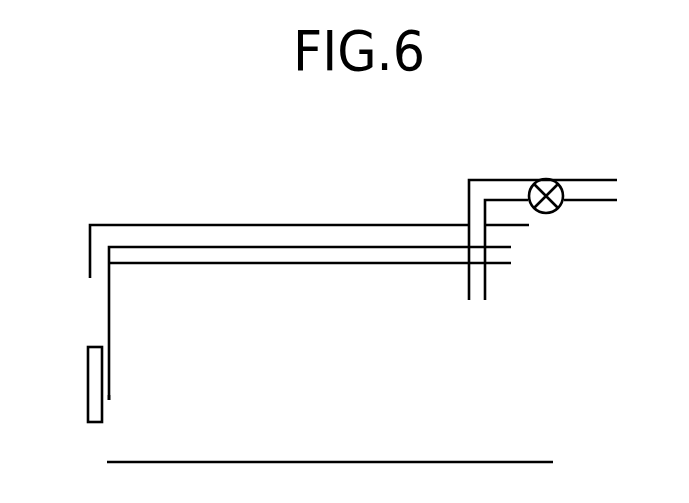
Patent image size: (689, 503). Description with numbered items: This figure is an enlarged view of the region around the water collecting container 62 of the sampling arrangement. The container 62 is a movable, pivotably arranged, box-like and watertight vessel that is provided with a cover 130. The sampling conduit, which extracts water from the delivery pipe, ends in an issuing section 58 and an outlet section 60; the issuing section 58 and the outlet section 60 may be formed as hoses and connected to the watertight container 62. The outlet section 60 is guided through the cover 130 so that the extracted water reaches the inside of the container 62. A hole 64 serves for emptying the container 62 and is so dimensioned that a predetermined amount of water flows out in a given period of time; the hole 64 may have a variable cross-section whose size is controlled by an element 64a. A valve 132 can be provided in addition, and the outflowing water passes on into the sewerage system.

The cover 130 is at (261, 226).
The issuing section 58 is at (499, 178).
The outlet section 60 is at (468, 211).
The valve 132 is at (557, 180).
The water collecting container 62 is at (325, 352).
The hole 64 is at (107, 421).
The element 64a is at (88, 381).